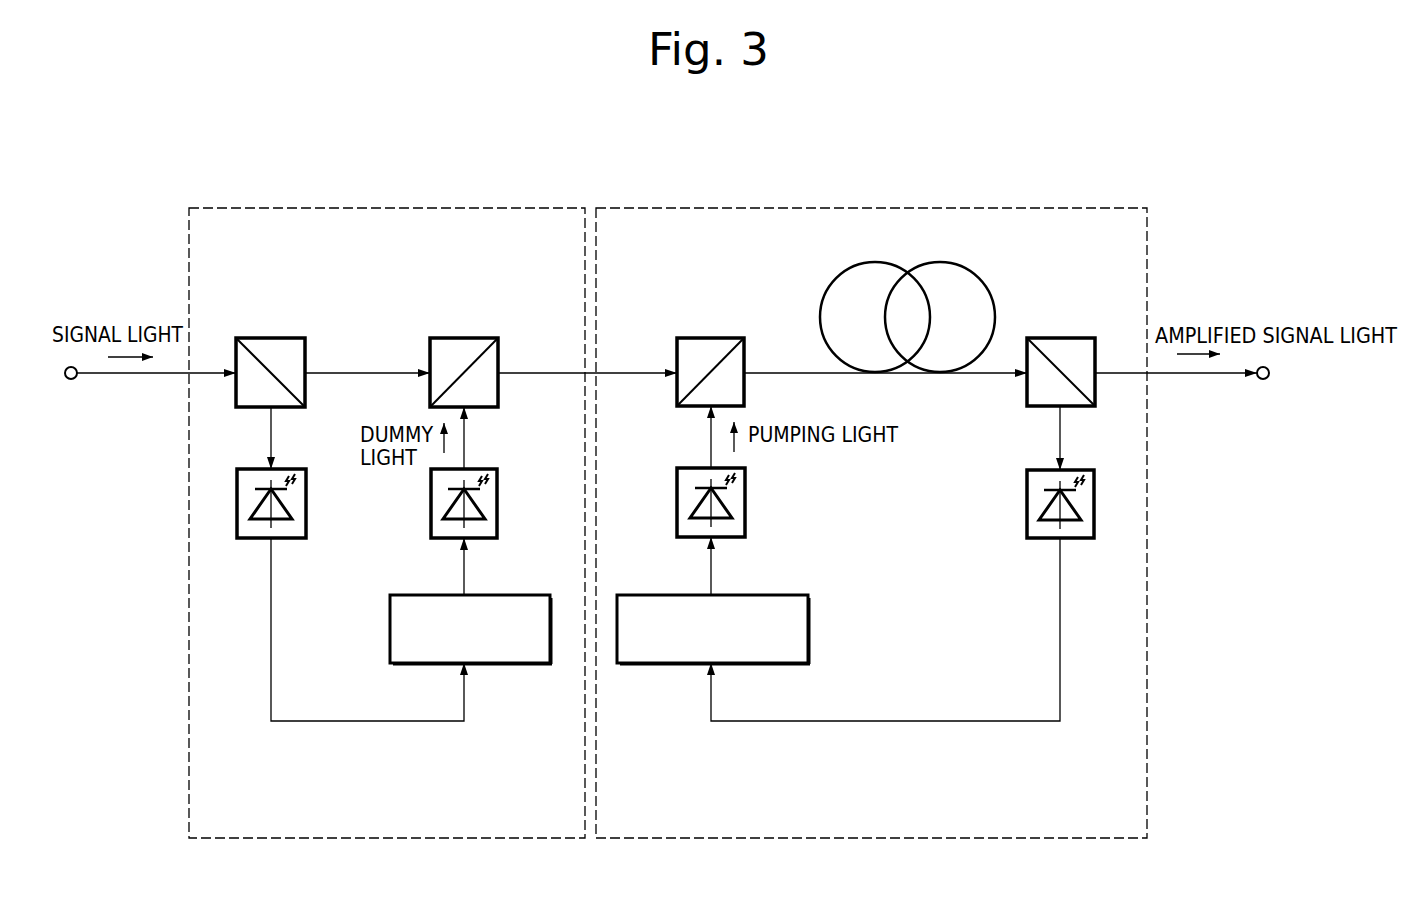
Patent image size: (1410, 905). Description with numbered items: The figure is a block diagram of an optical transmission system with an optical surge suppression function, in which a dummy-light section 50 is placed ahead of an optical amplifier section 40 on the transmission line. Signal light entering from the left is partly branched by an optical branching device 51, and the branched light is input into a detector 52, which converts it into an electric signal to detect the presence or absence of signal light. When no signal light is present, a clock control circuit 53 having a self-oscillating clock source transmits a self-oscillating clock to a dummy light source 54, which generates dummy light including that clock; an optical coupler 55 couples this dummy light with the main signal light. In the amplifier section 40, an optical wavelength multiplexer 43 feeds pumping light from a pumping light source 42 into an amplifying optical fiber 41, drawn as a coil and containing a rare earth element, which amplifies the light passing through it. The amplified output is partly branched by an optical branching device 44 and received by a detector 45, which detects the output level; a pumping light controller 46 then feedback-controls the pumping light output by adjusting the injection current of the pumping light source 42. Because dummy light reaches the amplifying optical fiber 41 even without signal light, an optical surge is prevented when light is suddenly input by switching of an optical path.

The optical amplifier section 40 is at (933, 207).
The amplifying optical fiber 41 is at (955, 265).
The pumping light source 42 is at (745, 498).
The optical wavelength multiplexer 43 is at (723, 337).
The optical branching device 44 is at (1087, 337).
The detector 45 is at (1088, 468).
The pumping light controller 46 is at (777, 595).
The dummy light insertion section 50 is at (427, 207).
The optical branching device 51 is at (280, 338).
The detector 52 is at (288, 473).
The clock control circuit 53 is at (538, 595).
The dummy light source 54 is at (487, 473).
The optical coupler 55 is at (478, 338).